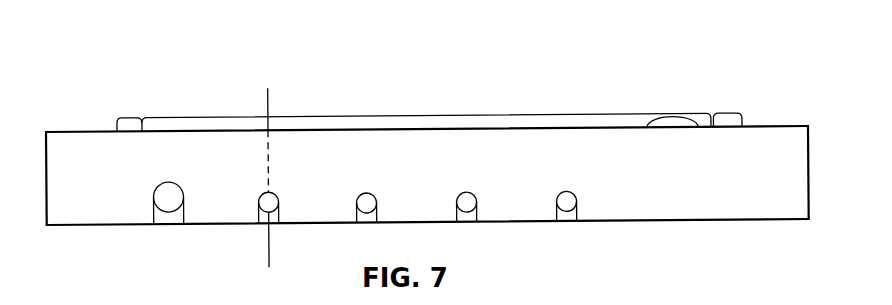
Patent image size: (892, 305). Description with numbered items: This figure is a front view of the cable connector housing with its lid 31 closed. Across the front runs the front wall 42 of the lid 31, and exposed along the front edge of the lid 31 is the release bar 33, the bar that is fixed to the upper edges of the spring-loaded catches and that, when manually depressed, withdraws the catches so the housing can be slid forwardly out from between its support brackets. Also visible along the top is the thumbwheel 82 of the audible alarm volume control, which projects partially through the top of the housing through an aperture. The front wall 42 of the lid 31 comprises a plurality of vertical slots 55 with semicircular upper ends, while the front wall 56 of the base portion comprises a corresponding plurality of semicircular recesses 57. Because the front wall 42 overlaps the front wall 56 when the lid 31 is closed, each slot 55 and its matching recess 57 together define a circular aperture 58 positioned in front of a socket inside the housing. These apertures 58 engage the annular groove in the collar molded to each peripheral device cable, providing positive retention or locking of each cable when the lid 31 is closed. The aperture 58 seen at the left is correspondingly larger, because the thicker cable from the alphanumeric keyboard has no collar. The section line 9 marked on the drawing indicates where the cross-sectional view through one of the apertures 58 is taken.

The section line 9- 9 is at (268, 90).
The release bar 33 is at (521, 119).
The thumbwheel 82 is at (670, 122).
The lid 31 is at (733, 119).
The front wall 42 is at (687, 215).
The vertical slots 55 is at (181, 190).
The front wall 56 is at (566, 216).
The semicircular recesses 57 is at (367, 207).
The circular apertures 58 is at (168, 197).